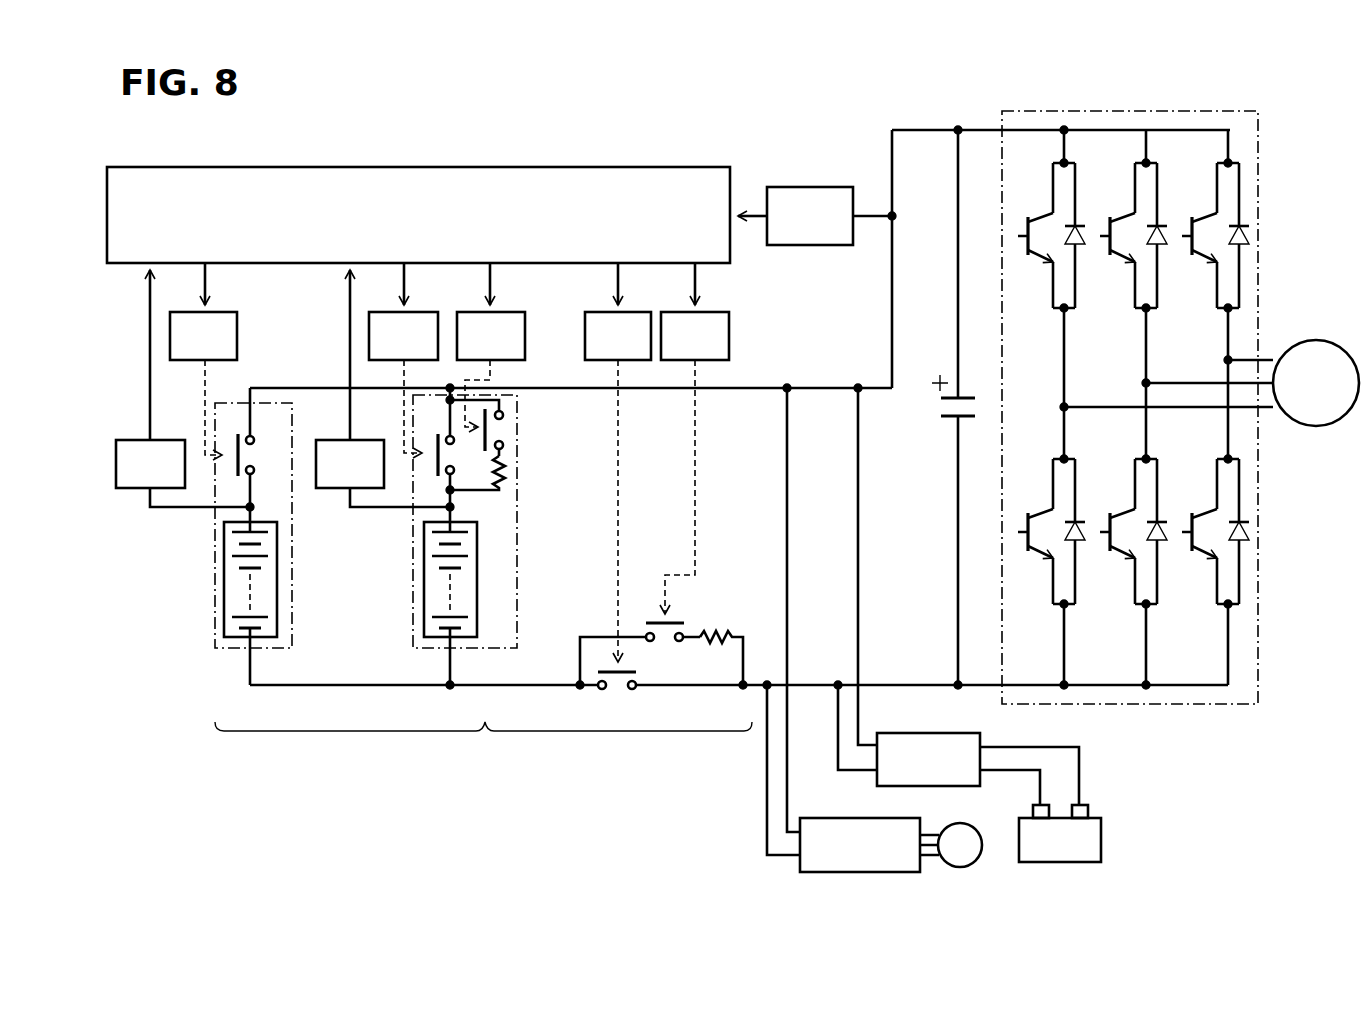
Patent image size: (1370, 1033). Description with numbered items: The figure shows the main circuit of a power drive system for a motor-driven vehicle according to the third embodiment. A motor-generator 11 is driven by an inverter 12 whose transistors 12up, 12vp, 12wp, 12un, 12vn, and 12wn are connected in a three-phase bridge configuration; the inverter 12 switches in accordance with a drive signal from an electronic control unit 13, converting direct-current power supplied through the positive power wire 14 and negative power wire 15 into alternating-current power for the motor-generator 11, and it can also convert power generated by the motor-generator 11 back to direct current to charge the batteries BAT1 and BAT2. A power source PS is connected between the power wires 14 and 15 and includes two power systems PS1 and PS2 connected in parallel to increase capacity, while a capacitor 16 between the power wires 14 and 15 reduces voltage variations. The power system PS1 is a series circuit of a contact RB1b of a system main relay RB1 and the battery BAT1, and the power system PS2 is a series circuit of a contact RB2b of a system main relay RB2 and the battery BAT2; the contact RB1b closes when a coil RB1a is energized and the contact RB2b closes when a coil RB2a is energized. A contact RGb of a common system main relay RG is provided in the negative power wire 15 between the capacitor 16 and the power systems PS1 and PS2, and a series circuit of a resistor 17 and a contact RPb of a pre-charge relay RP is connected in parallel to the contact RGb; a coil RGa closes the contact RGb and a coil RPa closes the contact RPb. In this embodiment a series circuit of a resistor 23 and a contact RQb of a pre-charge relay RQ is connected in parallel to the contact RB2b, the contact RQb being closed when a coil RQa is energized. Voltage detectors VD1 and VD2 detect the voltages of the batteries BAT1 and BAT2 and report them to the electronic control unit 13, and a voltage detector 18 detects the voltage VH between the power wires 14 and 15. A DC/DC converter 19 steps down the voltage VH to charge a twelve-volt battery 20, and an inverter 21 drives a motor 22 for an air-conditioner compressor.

The motor-generator 11 is at (1318, 340).
The inverter 12 is at (1108, 407).
The transistor 12up is at (1046, 214).
The transistor 12vp is at (1126, 214).
The transistor 12wp is at (1208, 214).
The transistor 12un is at (1046, 510).
The transistor 12vn is at (1126, 510).
The transistor 12wn is at (1208, 510).
The electronic control unit 13 is at (410, 167).
The positive power wire 14 is at (750, 388).
The negative power wire 15 is at (748, 685).
The capacitor 16 is at (970, 388).
The resistor 17 is at (712, 630).
The voltage detector 18 is at (815, 187).
The DC/DC converter 19 is at (918, 733).
The 12-volt battery 20 is at (1101, 836).
The inverter 21 is at (850, 818).
The motor 22 is at (975, 826).
The resistor 23 is at (506, 468).
The voltage VH is at (1059, 246).
The voltage detector VD1 is at (130, 440).
The voltage detector VD2 is at (330, 440).
The system main relay RB1 is at (194, 433).
The coil RB1a is at (222, 312).
The contact RB1b is at (238, 442).
The system main relay RB2 is at (394, 433).
The coil RB2a is at (422, 312).
The contact RB2b is at (434, 442).
The pre-charge relay RQ is at (520, 384).
The coil RQa is at (506, 312).
The contact RQb is at (506, 430).
The common system main relay RG is at (598, 535).
The coil RGa is at (634, 312).
The contact RGb is at (617, 692).
The pre-charge relay RP is at (672, 535).
The coil RPa is at (708, 312).
The contact RPb is at (666, 644).
The battery BAT1 is at (224, 553).
The battery BAT2 is at (424, 553).
The power system PS1 is at (215, 595).
The power system PS2 is at (517, 590).
The power source PS is at (483, 746).